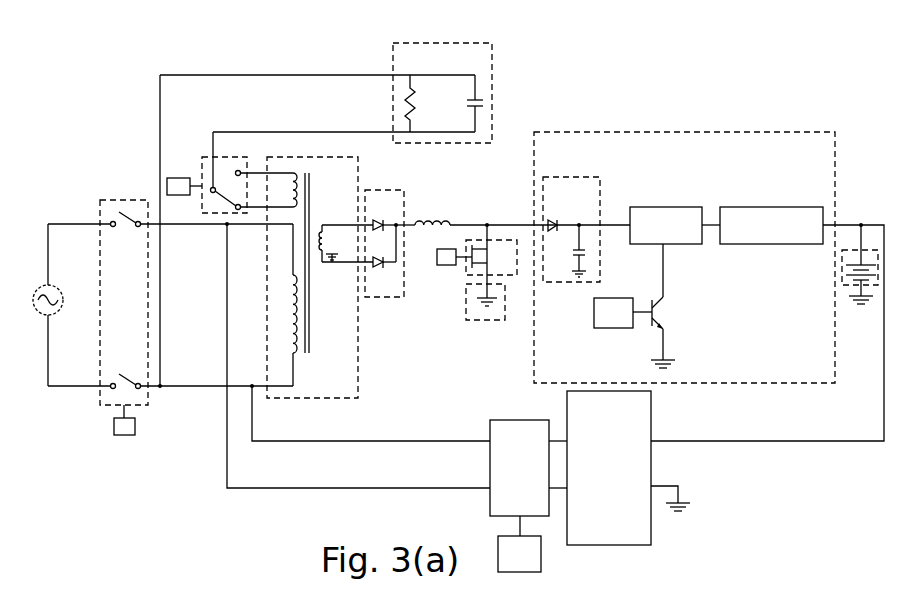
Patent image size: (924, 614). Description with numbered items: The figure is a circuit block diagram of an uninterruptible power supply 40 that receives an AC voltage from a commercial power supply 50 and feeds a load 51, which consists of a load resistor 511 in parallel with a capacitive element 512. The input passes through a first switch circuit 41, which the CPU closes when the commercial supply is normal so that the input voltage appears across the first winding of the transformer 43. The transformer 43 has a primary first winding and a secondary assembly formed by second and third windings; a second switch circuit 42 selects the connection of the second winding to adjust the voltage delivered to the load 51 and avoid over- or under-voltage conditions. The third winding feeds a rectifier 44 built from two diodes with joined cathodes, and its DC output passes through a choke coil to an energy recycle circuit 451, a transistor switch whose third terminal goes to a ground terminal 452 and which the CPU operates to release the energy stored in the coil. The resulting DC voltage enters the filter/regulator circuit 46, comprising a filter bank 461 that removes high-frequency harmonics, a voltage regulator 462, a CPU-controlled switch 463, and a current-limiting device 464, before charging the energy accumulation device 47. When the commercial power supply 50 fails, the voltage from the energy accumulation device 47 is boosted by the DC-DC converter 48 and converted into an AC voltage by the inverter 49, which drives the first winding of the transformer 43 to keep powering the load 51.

The uninterruptible power supply 40 is at (55, 72).
The first switch circuit 41 is at (123, 200).
The second switch circuit 42 is at (228, 156).
The transformer 43 is at (310, 157).
The rectifier 44 is at (385, 190).
The filter/regulator circuit 46 is at (683, 132).
The energy accumulation device 47 is at (868, 250).
The DC-DC converter 48 is at (652, 418).
The inverter 49 is at (513, 420).
The commercial power supply 50 is at (34, 290).
The load 51 is at (440, 79).
The energy recycle circuit 451 is at (487, 222).
The ground terminal 452 is at (492, 320).
The filter bank 461 is at (572, 177).
The voltage regulator 462 is at (668, 207).
The switch 463 is at (665, 316).
The current-limiting device 464 is at (772, 207).
The load resistor 511 is at (405, 90).
The capacitive element 512 is at (483, 100).